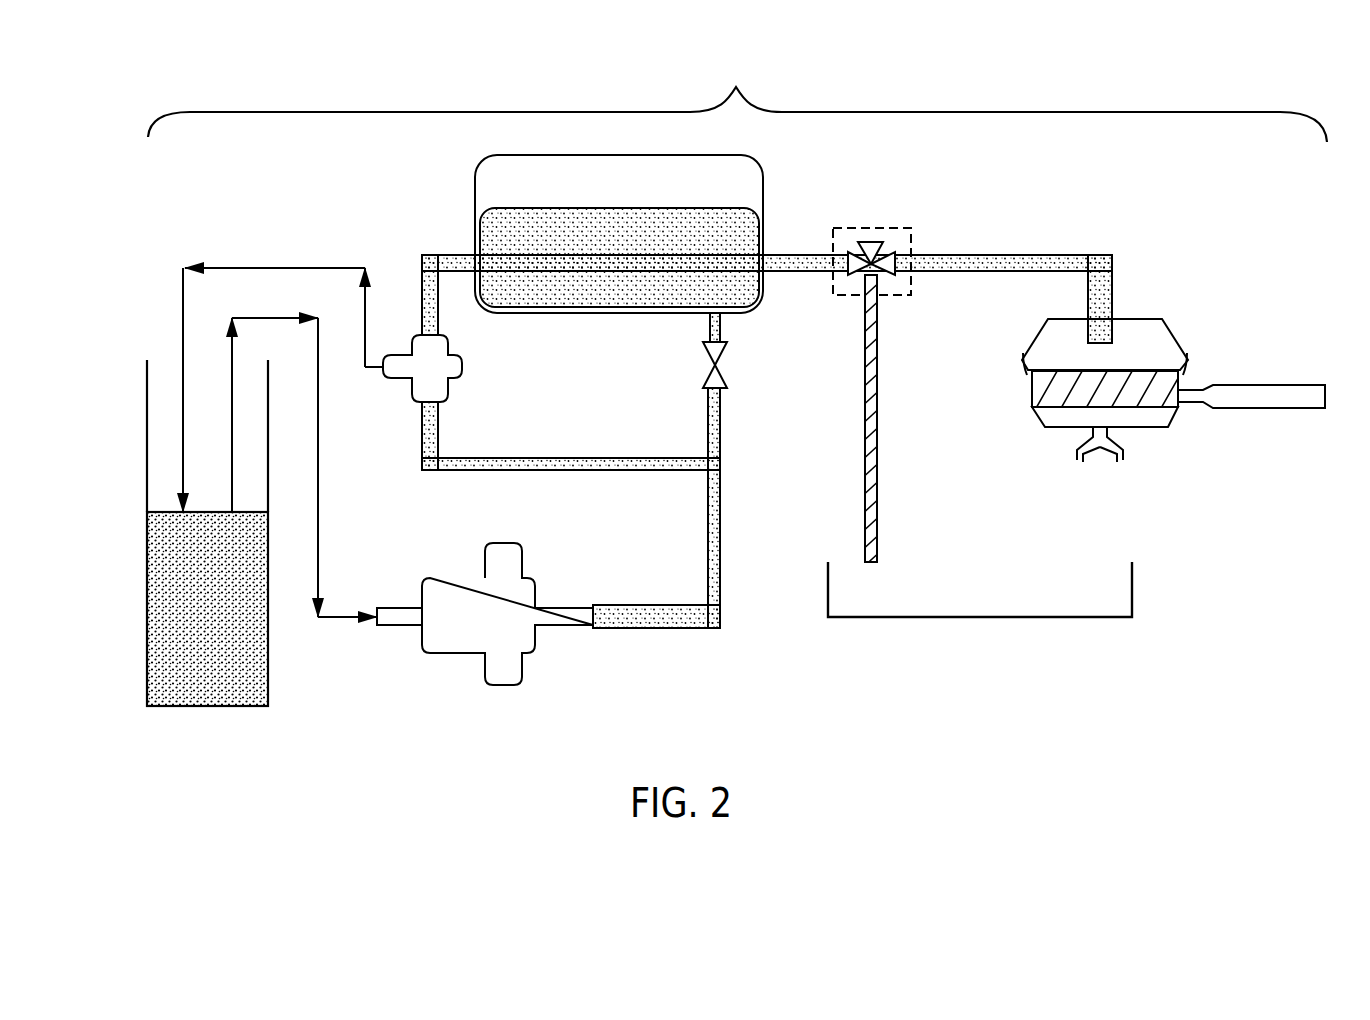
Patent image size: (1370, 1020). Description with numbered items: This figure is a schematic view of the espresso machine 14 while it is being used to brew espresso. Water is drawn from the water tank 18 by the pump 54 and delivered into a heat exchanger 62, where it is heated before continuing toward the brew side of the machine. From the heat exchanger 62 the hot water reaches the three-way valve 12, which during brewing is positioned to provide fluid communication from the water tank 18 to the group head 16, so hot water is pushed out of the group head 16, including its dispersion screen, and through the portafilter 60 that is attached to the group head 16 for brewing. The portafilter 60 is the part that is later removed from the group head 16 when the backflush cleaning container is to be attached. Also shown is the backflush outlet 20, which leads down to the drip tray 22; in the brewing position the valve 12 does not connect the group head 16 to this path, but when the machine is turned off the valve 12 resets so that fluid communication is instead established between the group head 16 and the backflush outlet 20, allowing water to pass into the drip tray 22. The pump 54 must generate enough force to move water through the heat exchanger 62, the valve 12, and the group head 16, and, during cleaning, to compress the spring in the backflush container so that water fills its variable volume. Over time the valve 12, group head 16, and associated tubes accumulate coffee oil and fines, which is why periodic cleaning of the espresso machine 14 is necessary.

The espresso machine 14 is at (737, 96).
The heat exchanger 62 is at (727, 222).
The 3-way valve 12 is at (912, 234).
The backflush outlet 20 is at (867, 355).
The group head 16 is at (1158, 346).
The portafilter 60 is at (1130, 418).
The drip tray 22 is at (1106, 619).
The water tank 18 is at (166, 616).
The pump 54 is at (464, 638).